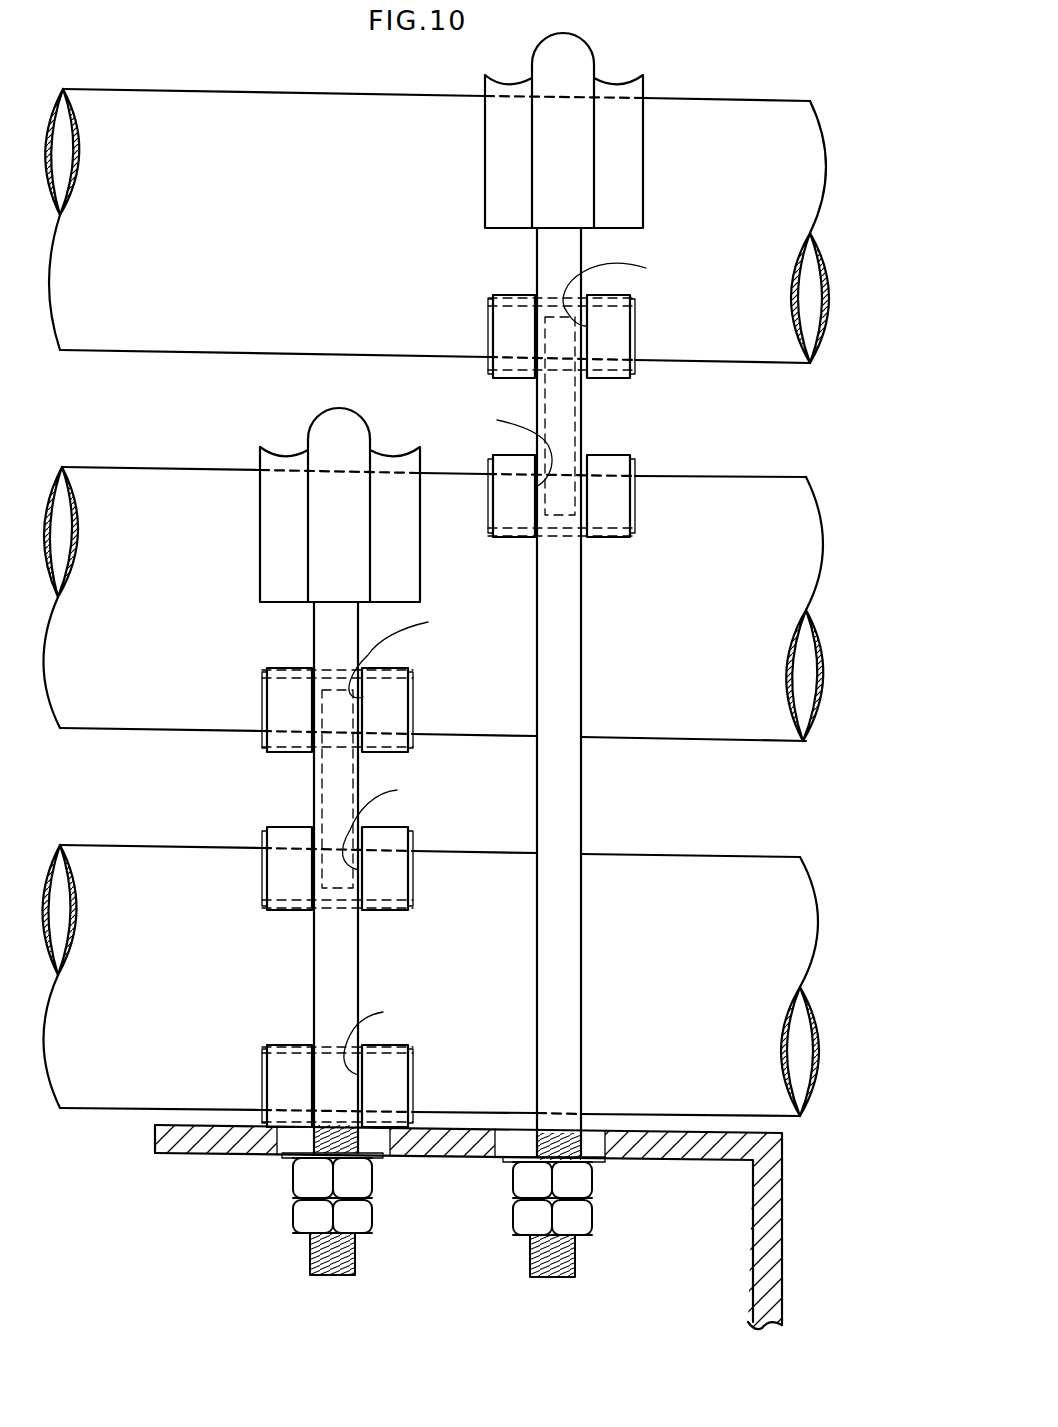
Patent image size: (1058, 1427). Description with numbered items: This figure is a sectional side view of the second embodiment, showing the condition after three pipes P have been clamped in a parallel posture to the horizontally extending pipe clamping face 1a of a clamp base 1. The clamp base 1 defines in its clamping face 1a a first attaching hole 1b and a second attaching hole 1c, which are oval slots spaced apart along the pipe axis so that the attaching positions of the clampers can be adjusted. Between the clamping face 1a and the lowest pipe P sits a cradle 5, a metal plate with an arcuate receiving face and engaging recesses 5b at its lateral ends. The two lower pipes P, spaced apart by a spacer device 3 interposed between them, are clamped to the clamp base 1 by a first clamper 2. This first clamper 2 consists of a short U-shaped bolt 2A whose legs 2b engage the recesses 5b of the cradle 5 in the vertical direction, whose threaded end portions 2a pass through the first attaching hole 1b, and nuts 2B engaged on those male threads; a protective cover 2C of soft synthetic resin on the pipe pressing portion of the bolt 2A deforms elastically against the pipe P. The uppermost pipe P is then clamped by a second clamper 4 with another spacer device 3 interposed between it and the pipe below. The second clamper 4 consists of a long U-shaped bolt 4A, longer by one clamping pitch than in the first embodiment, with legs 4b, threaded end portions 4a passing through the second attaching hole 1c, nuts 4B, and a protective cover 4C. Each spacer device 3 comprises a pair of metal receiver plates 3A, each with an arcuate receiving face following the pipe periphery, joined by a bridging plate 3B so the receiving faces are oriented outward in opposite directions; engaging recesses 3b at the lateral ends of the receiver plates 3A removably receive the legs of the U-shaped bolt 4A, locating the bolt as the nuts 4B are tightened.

The pipe P is at (757, 108).
The clamp base 1 is at (488, 1190).
The pipe clamping face 1a is at (701, 1133).
The first attaching hole 1b is at (380, 1148).
The second attaching hole 1c is at (590, 1135).
The first clamper 2 is at (293, 793).
The U-shaped bolt 2A is at (262, 938).
The lower threaded portion of first rod 2a is at (310, 1256).
The opposed legs 2b is at (314, 996).
The nuts 2B is at (295, 1213).
The protective cover 2C is at (338, 407).
The spacer device 3 is at (447, 582).
The receiver plates 3A is at (620, 338).
The bridging plate 3B is at (580, 406).
The engaging recesses 3b is at (411, 686).
The second clamper 4 is at (614, 662).
The U-shaped bolt 4A is at (636, 760).
The lower threaded portion of second rod 4a is at (577, 1249).
The upper portion of second rod 4b is at (580, 950).
The nuts 4B is at (587, 1217).
The protective cover 4C is at (585, 60).
The cradle 5 is at (292, 1054).
The engaging recesses 5b is at (381, 1028).